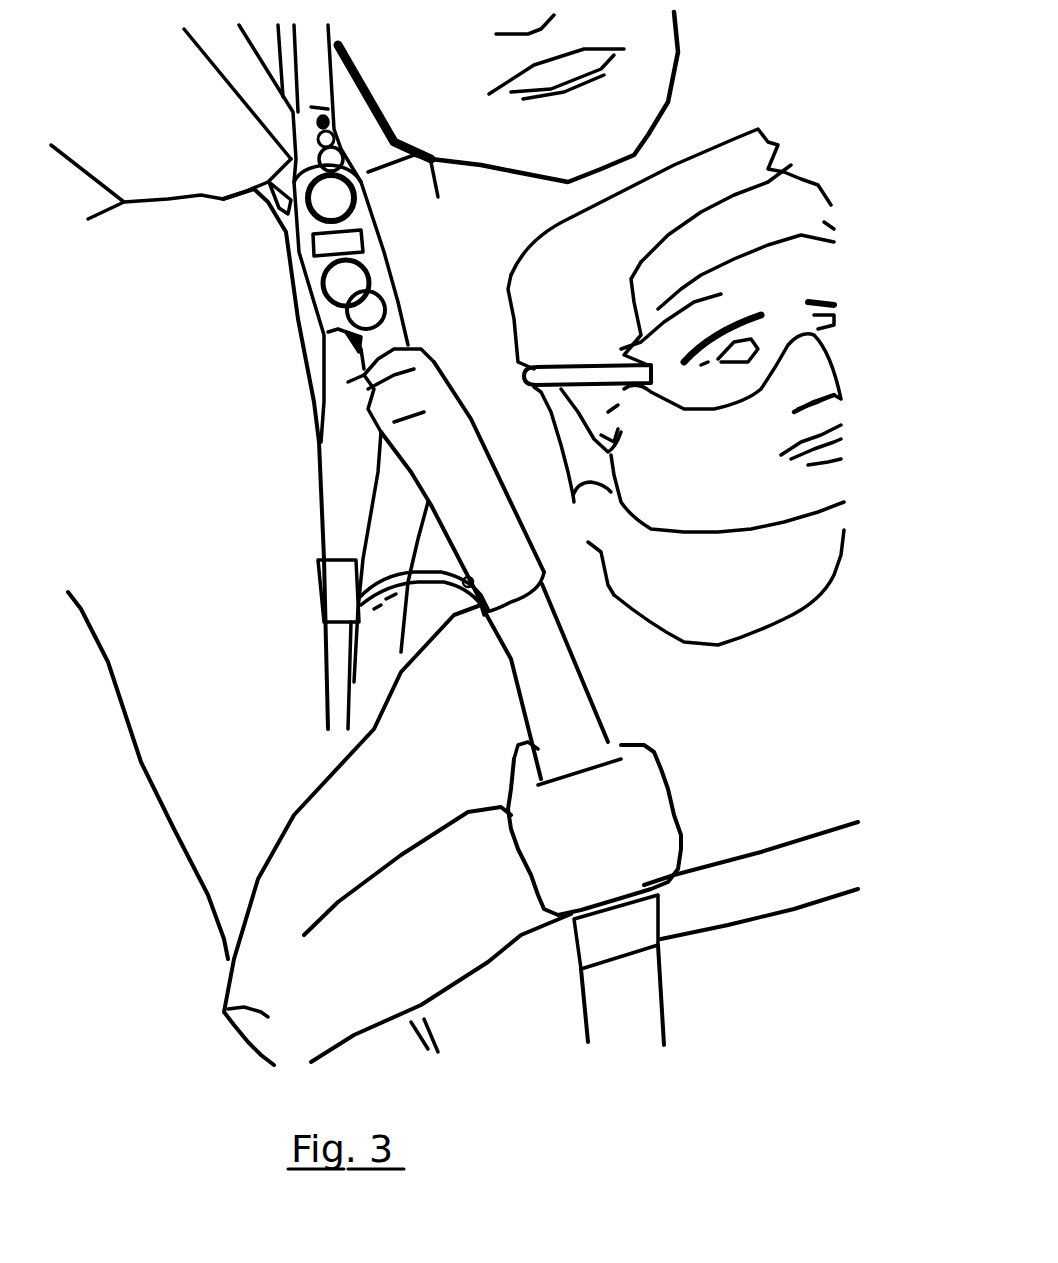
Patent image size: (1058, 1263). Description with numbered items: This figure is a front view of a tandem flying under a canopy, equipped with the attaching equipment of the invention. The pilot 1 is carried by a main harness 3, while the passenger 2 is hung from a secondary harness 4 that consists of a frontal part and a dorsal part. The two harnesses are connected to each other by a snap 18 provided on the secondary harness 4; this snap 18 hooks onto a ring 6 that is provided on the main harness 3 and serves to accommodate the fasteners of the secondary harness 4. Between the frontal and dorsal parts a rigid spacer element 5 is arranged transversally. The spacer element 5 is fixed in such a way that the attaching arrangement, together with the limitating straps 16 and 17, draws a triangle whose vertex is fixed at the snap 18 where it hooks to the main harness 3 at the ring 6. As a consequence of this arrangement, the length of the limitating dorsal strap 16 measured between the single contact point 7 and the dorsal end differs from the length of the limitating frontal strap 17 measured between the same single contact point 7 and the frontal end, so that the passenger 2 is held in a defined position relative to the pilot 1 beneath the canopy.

The pilot 1 is at (207, 760).
The passenger 2 is at (223, 1010).
The main harness 3 is at (343, 480).
The secondary harness 4 is at (633, 1010).
The spacer element 5 is at (347, 590).
The ring 6 is at (313, 263).
The single contact point 7 is at (403, 393).
The limitating dorsal strap 16 is at (380, 537).
The limitating frontal strap 17 is at (463, 487).
The snap 18 is at (370, 317).